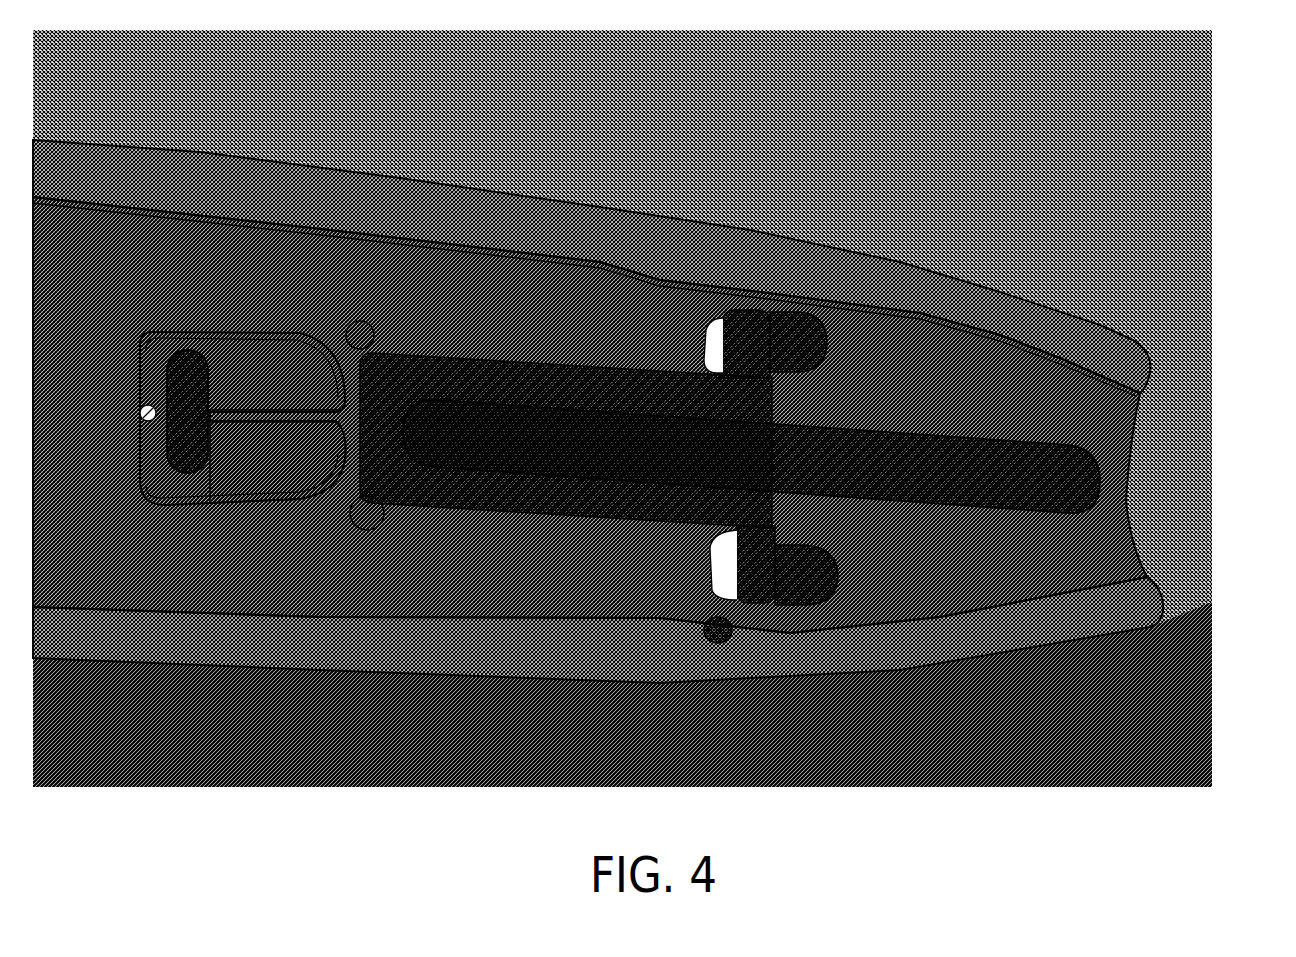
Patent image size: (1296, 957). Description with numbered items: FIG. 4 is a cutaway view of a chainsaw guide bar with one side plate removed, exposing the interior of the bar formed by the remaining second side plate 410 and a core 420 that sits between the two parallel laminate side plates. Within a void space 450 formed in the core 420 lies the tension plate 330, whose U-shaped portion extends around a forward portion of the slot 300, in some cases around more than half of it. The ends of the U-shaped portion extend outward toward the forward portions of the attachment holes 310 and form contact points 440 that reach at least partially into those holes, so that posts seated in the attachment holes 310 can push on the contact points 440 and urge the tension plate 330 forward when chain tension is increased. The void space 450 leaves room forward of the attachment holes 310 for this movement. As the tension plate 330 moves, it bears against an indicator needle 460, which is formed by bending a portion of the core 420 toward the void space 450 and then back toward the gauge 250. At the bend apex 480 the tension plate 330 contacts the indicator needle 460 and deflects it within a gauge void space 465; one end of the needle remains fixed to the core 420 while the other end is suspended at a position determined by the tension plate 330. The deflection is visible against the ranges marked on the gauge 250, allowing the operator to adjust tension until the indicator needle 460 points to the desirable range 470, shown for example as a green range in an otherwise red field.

The gauge 250 is at (198, 411).
The slot 300 is at (857, 450).
The attachment holes 310 is at (800, 340).
The tension plate 330 is at (500, 372).
The second side plate 410 is at (1133, 343).
The core 420 is at (158, 250).
The contact points 440 is at (765, 350).
The void space 450 is at (712, 318).
The indicator needle 460 is at (236, 408).
The gauge void space 465 is at (248, 483).
The desirable range 470 is at (158, 440).
The bend apex 480 is at (347, 380).